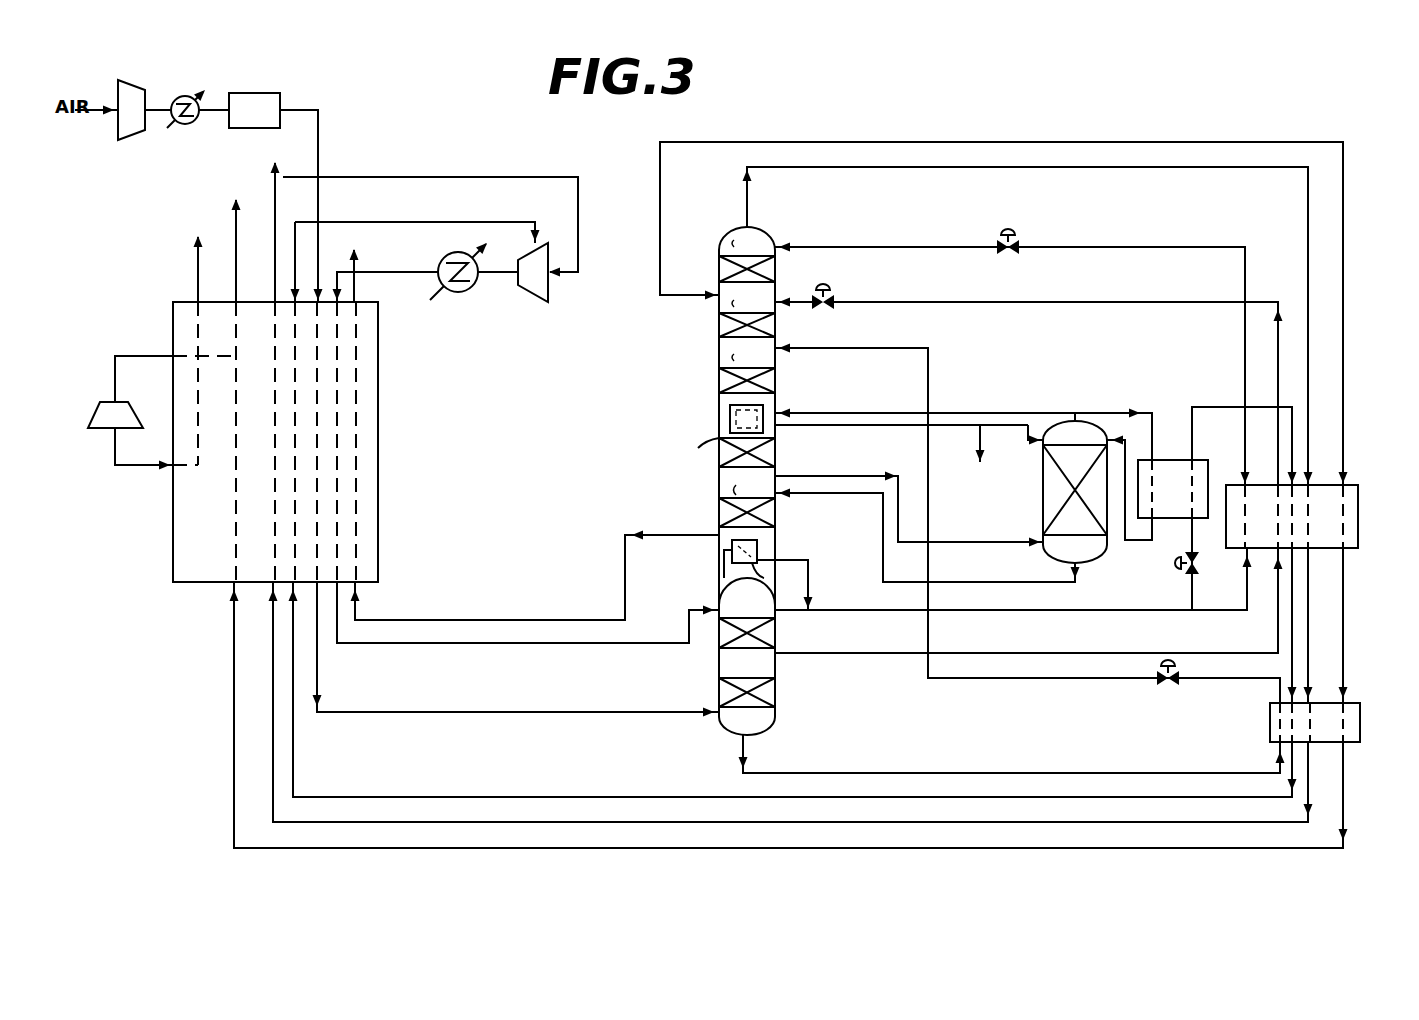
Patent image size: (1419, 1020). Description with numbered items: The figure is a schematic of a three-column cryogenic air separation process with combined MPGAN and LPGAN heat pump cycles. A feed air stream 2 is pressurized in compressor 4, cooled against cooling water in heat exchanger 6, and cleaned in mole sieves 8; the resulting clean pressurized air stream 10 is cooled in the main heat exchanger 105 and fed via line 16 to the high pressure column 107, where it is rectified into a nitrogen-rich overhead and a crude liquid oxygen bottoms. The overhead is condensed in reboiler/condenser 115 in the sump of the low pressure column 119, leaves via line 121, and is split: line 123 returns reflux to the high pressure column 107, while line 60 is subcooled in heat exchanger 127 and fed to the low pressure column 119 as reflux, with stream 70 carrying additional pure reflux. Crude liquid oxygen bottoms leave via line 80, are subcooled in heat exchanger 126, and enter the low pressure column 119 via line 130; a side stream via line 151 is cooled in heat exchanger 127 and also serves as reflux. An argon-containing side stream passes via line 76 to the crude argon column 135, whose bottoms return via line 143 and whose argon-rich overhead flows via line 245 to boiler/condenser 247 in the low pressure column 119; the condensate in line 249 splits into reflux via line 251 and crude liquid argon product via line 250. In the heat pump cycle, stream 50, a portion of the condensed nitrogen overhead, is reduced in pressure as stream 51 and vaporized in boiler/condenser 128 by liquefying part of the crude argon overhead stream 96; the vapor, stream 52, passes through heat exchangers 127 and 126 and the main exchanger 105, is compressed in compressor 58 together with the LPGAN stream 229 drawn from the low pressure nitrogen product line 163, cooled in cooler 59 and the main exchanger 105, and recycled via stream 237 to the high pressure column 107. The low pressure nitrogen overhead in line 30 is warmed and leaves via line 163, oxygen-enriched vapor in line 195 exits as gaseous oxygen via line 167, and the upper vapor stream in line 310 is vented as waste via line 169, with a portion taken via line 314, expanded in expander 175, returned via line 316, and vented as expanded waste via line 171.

The feed air stream 2 is at (100, 104).
The compressor 4 is at (130, 90).
The heat exchanger 6 is at (178, 92).
The mole sieves 8 is at (246, 93).
The clean pressurized air stream 10 is at (320, 214).
The line 16 is at (465, 712).
The line 30 is at (755, 213).
The stream 50 is at (1193, 610).
The stream 51 is at (1193, 560).
The stream 52 is at (1192, 416).
The compressor 58 is at (532, 300).
The cooler 59 is at (462, 292).
The line 60 is at (1008, 618).
The stream 70 is at (886, 247).
The line 76 is at (840, 484).
The line 80 is at (1086, 773).
The stream 96 is at (1092, 414).
The heat exchanger 105 is at (173, 545).
The high pressure column 107 is at (775, 665).
The reboiler/condenser 115 is at (764, 572).
The low pressure column 119 is at (717, 353).
The line 121 is at (808, 594).
The line 123 is at (790, 613).
The heat exchanger 126 is at (1268, 718).
The heat exchanger 127 is at (1262, 552).
The boiler/condenser 128 is at (1196, 462).
The line 130 is at (826, 352).
The crude argon column 135 is at (1045, 476).
The line 143 is at (1004, 586).
The line 151 is at (1100, 658).
The line 163 is at (275, 217).
The line 167 is at (356, 285).
The line 169 is at (236, 255).
The line 171 is at (200, 268).
The expander 175 is at (100, 401).
The line 195 is at (683, 536).
The stream 229 is at (460, 190).
The stream 237 is at (600, 645).
The line 245 is at (1040, 406).
The boiler/condenser 247 is at (776, 415).
The line 249 is at (828, 425).
The line 250 is at (959, 449).
The line 251 is at (1030, 436).
The line 310 is at (660, 226).
The line 314 is at (158, 356).
The line 316 is at (136, 468).